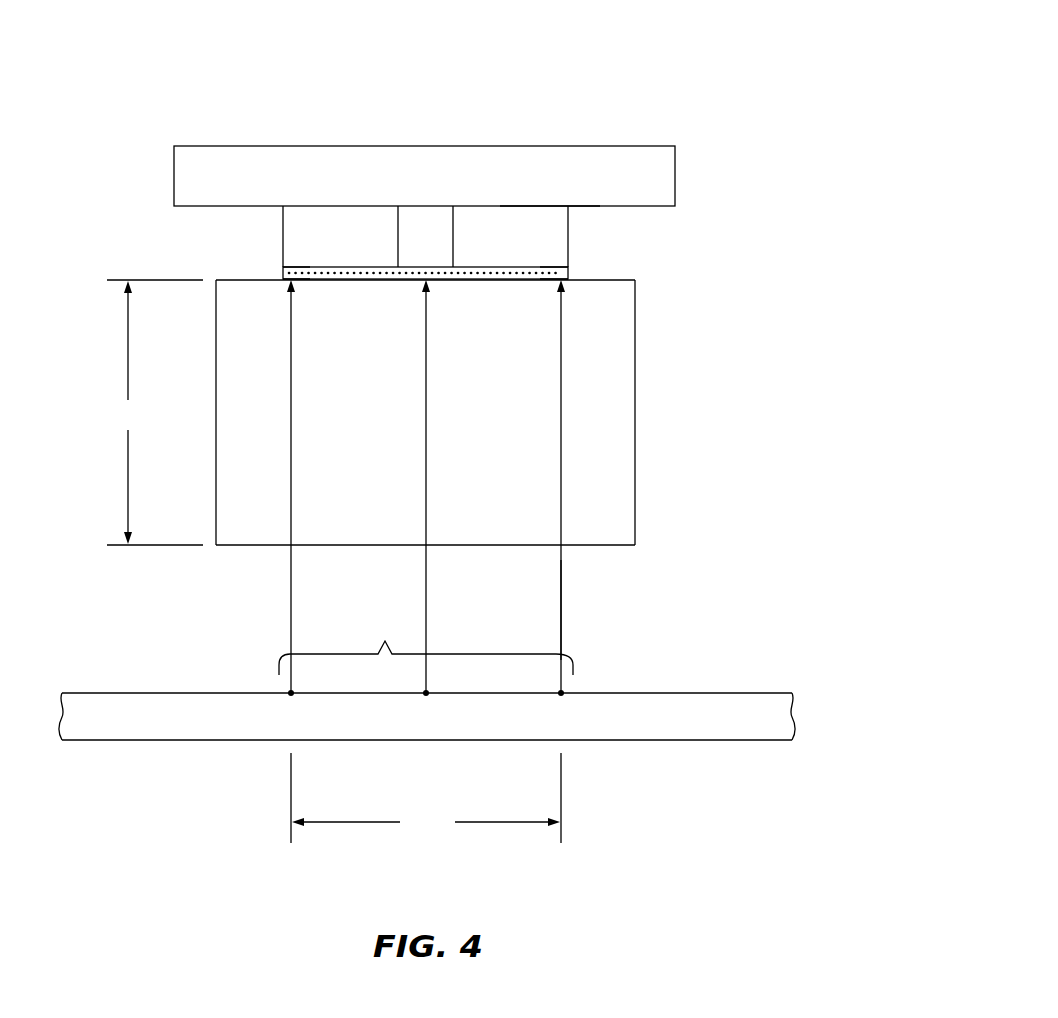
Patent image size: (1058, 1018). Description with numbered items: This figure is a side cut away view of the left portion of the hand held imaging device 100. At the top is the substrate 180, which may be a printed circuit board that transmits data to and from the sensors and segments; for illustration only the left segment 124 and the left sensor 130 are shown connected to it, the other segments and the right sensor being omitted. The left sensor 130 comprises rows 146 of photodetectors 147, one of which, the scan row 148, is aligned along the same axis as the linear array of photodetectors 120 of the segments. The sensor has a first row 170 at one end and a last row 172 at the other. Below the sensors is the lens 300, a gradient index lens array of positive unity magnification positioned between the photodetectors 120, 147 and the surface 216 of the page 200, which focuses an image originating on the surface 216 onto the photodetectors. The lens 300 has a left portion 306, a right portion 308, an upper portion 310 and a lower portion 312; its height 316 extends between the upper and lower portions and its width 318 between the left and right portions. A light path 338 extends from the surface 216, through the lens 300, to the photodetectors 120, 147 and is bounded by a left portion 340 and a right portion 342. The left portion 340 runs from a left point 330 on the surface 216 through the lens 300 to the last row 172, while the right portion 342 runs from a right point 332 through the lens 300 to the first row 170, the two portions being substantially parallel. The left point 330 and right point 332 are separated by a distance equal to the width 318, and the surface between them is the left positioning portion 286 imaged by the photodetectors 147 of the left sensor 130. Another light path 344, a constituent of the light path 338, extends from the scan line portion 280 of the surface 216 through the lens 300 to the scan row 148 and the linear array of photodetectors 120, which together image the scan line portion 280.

The imaging device 100 is at (715, 63).
The linear array of photodetectors 120 is at (425, 266).
The first segment 124 is at (397, 225).
The left sensor 130 is at (540, 200).
The row 146 is at (530, 265).
The photodetectors 147 is at (373, 274).
The scan row 148 is at (425, 182).
The first row 170 is at (571, 270).
The last row 172 is at (283, 271).
The substrate 180 is at (676, 172).
The page 200 is at (478, 691).
The surface 216 is at (717, 692).
The scan line portion 280 is at (426, 697).
The left positioning portion 286 is at (426, 638).
The lens 300 is at (451, 412).
The left portion 306 is at (216, 442).
The right portion 308 is at (635, 363).
The upper portion 310 is at (612, 281).
The lower portion 312 is at (612, 544).
The height 316 is at (155, 412).
The width 318 is at (426, 798).
The left point 330 is at (289, 698).
The right point 332 is at (562, 697).
The light path 338 is at (574, 610).
The left portion 340 is at (292, 437).
The right portion 342 is at (560, 436).
The light path 344 is at (427, 385).